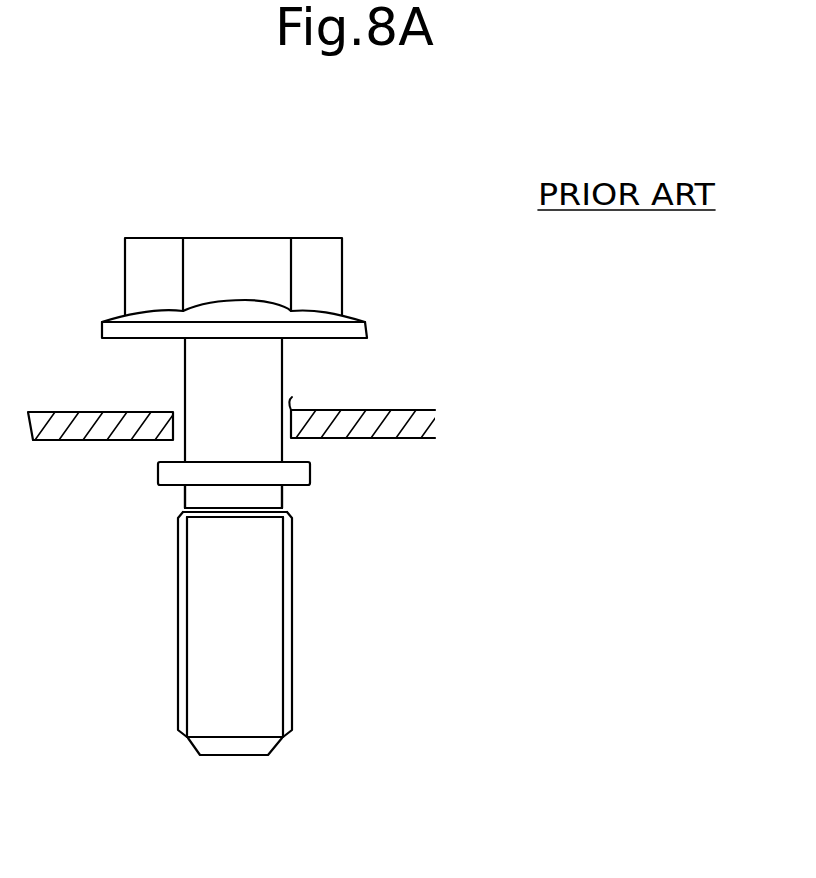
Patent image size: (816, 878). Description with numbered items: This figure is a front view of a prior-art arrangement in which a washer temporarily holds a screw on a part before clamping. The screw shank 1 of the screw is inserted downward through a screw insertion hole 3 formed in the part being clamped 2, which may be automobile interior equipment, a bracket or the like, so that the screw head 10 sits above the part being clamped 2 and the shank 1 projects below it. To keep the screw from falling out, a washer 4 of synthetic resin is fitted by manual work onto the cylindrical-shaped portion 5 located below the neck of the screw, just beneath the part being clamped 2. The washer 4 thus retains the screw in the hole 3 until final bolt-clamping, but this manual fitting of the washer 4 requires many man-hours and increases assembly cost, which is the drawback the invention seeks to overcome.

The screw shank 1 is at (238, 612).
The part being clamped 2 is at (388, 420).
The screw insertion hole 3 is at (293, 397).
The washer 4 is at (288, 475).
The cylindrical-shaped portion 5 is at (205, 498).
The screw head 10 is at (250, 262).